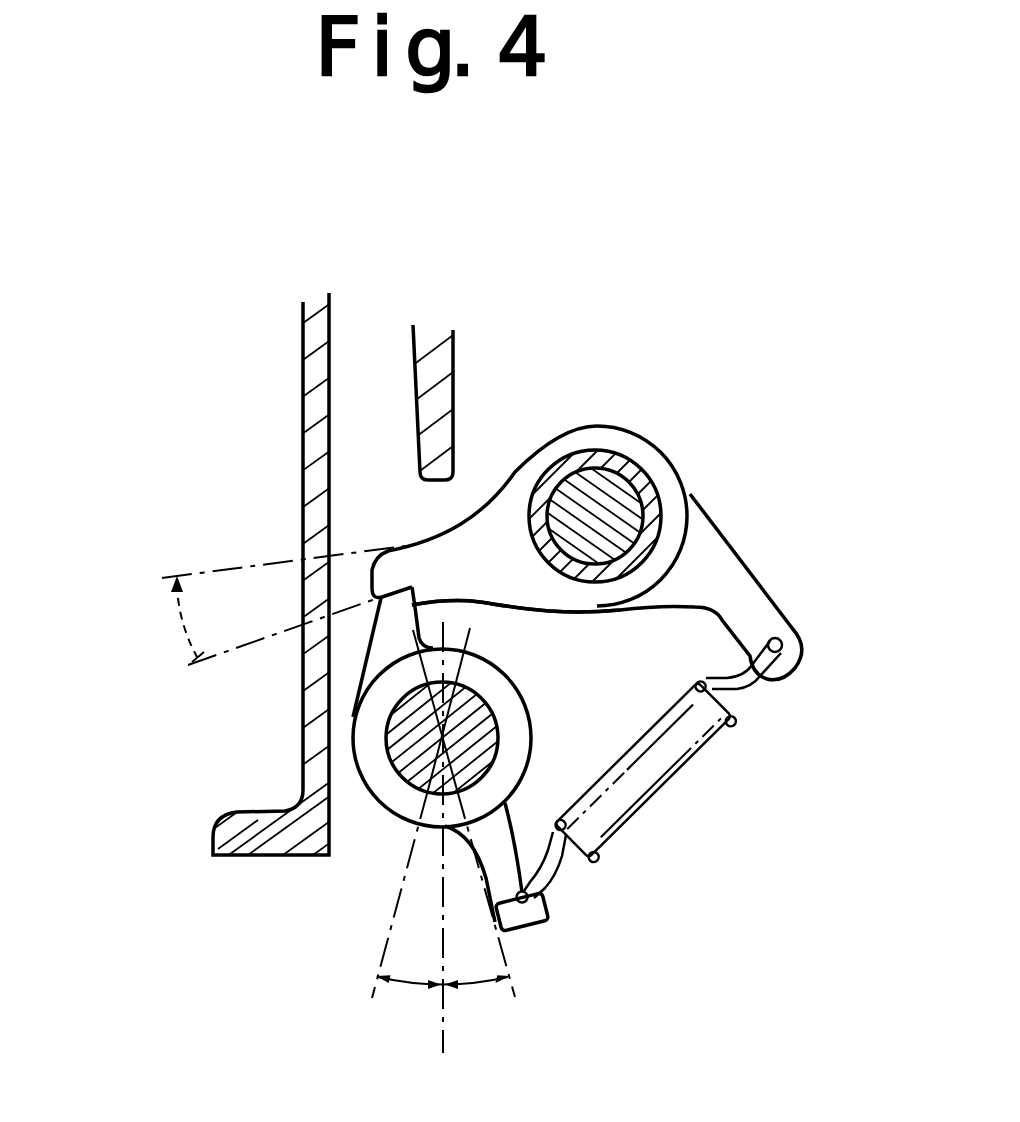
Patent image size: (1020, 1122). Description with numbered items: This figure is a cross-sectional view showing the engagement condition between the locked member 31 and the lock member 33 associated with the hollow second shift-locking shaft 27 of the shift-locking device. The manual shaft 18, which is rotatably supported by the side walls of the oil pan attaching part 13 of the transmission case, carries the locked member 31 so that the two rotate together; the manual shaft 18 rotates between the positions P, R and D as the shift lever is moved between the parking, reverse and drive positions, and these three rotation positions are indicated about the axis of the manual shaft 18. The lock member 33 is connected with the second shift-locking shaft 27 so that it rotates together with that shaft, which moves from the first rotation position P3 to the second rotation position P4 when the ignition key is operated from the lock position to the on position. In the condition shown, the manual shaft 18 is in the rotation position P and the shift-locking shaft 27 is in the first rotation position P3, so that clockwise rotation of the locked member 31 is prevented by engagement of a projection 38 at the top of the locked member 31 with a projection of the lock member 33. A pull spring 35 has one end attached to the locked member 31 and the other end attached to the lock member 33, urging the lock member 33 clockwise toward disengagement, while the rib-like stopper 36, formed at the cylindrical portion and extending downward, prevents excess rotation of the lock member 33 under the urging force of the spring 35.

The oil pan attaching part 13 is at (305, 410).
The rib-like stopper 36 is at (437, 365).
The lock member 33 is at (603, 437).
The second shift-locking shaft 27 is at (640, 487).
The contact portion of lever 38 is at (480, 603).
The pull spring 35 is at (740, 723).
The locked member 31 is at (507, 852).
The manual shaft 18 is at (413, 763).
The first rotation position P3 is at (252, 578).
The second rotation position P4 is at (250, 644).
The drive position D is at (429, 844).
The parking position P is at (477, 845).
The reverse position R is at (444, 871).